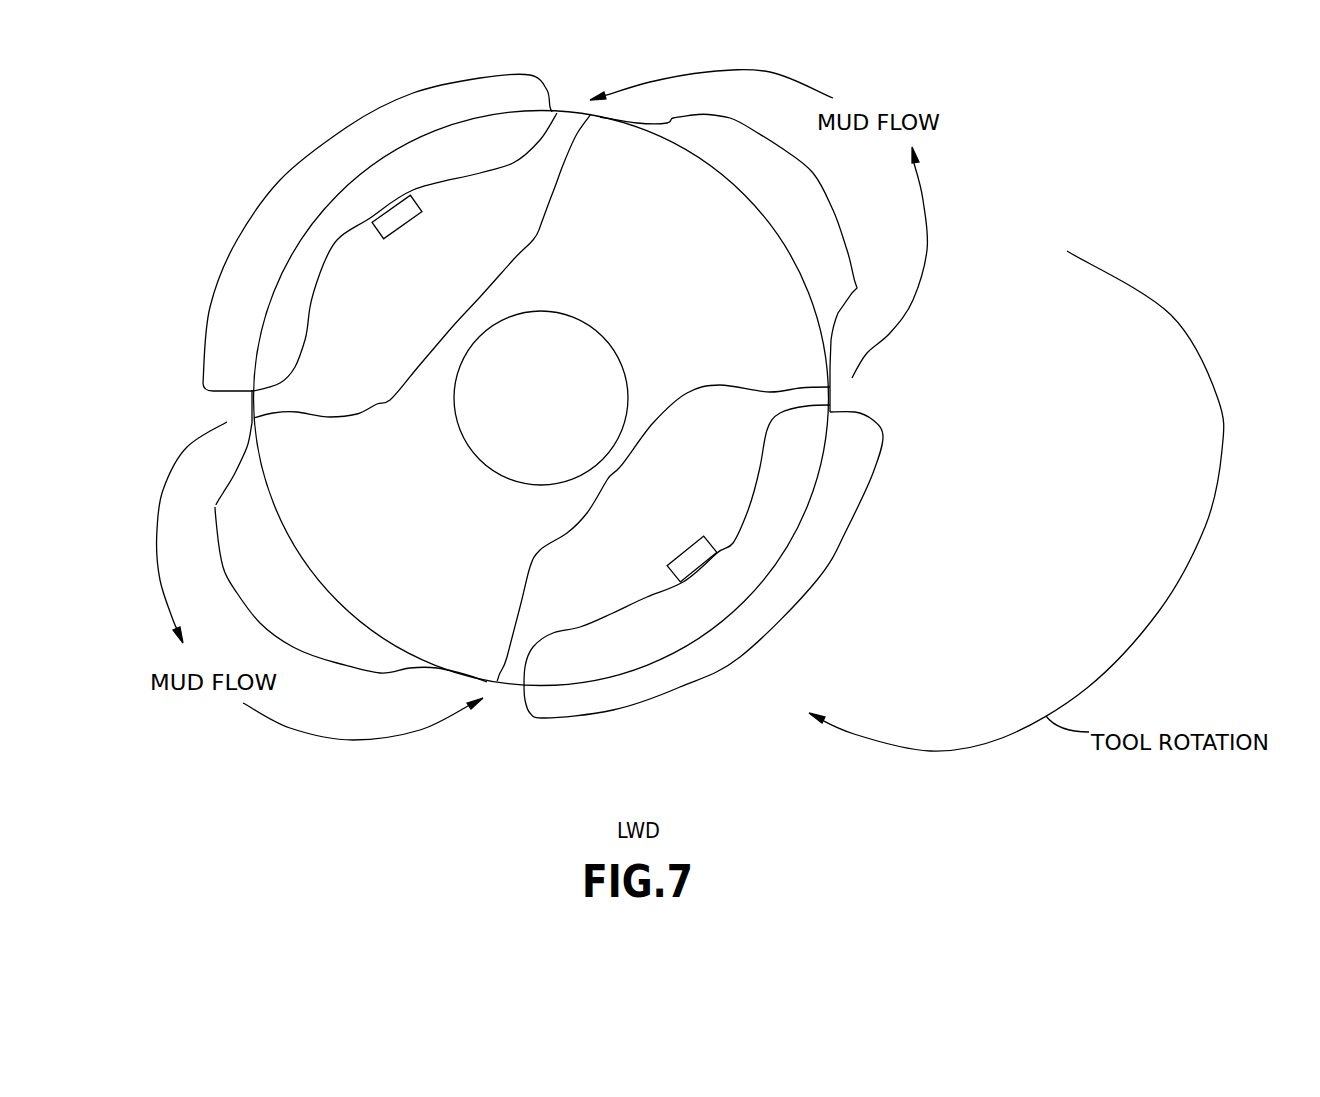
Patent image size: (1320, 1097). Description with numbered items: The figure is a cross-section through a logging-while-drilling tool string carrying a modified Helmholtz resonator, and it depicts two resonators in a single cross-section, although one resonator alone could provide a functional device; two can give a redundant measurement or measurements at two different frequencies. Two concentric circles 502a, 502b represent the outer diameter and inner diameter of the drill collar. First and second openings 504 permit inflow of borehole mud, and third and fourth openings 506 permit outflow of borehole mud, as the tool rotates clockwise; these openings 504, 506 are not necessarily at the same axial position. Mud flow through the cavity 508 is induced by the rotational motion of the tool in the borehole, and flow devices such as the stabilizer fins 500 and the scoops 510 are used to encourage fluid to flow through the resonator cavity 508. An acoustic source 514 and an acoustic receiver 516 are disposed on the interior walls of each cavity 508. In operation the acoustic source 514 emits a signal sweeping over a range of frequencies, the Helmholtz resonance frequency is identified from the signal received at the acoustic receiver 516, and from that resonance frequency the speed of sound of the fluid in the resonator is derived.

The stabilizer fin 500 is at (248, 236).
The outer concentric circle (drill collar OD) 502a is at (653, 663).
The inner concentric circle (drill collar ID) 502b is at (452, 392).
The first and second openings 504 is at (568, 98).
The third and fourth openings 506 is at (845, 400).
The cavity 508 is at (416, 308).
The scoop 510 is at (827, 196).
The acoustic source 514 is at (400, 228).
The acoustic receiver 516 is at (703, 540).